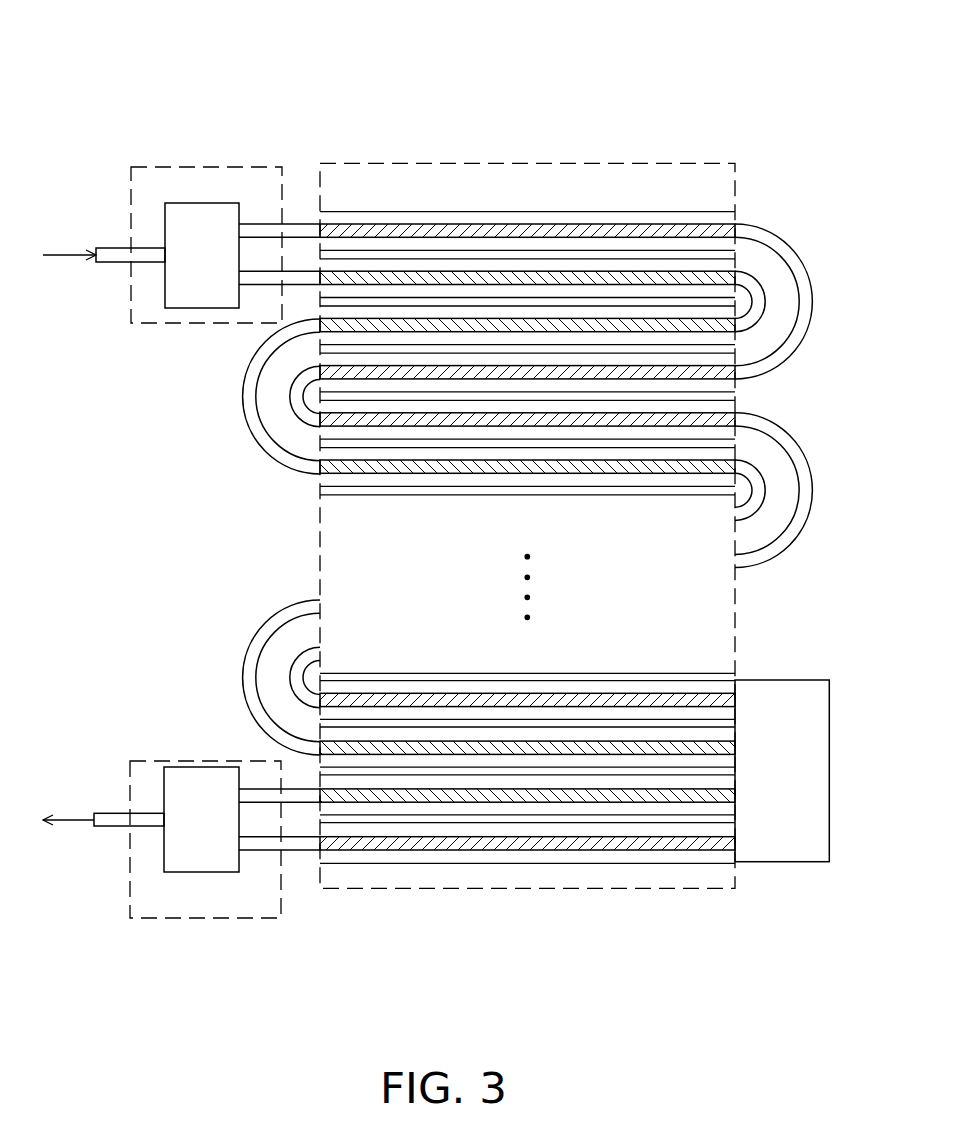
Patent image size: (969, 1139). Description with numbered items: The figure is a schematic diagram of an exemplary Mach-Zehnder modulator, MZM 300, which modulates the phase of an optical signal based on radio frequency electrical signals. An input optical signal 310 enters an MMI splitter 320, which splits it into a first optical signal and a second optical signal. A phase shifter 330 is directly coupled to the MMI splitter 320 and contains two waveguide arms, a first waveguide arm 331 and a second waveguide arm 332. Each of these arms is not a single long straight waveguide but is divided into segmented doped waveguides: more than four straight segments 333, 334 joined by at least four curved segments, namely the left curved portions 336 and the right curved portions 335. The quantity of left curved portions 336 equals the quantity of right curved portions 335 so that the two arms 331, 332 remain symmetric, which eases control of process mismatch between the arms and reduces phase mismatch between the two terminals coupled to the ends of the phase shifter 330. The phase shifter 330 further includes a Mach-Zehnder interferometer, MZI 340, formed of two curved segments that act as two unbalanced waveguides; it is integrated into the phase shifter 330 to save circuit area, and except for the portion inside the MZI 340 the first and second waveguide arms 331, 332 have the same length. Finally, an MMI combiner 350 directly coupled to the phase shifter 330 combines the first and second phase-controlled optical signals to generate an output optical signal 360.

The MZM 300 is at (88, 26).
The input optical signal 310 is at (70, 207).
The MMI splitter 320 is at (205, 167).
The phase shifter 330 is at (690, 163).
The first waveguide arm 331 is at (303, 224).
The second waveguide arm 332 is at (302, 271).
The straight segment 333 is at (713, 224).
The straight segment 334 is at (720, 270).
The right curved portion 335 is at (777, 332).
The left curved portion 336 is at (278, 425).
The Mach-Zehnder interferometer 340 is at (767, 680).
The MMI combiner 350 is at (193, 761).
The output optical signal 360 is at (70, 768).